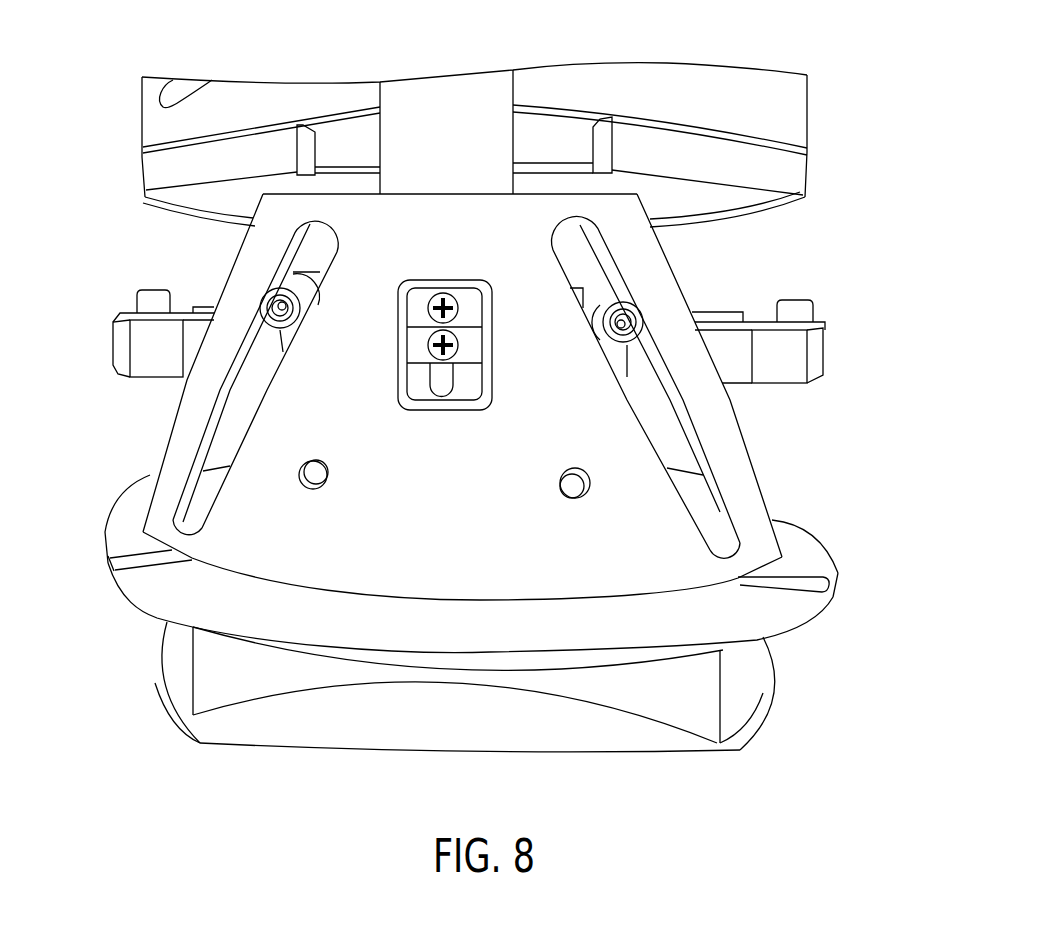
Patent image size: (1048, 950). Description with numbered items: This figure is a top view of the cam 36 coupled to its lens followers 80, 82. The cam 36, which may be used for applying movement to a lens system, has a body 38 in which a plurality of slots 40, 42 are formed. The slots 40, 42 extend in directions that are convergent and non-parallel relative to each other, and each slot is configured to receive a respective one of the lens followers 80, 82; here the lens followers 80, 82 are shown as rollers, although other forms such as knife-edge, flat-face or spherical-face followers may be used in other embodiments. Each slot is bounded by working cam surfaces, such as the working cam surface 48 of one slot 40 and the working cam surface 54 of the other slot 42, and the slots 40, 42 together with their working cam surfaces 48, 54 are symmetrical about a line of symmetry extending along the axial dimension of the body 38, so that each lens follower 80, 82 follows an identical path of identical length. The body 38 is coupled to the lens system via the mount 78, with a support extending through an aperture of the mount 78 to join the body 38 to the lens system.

The cam 36 is at (978, 103).
The body 38 is at (440, 190).
The slot 40 is at (180, 525).
The slot 42 is at (730, 543).
The working cam surface 48 is at (203, 457).
The working cam surface 54 is at (712, 478).
The mount 78 is at (485, 282).
The lens follower 80 is at (275, 290).
The lens follower 82 is at (622, 303).